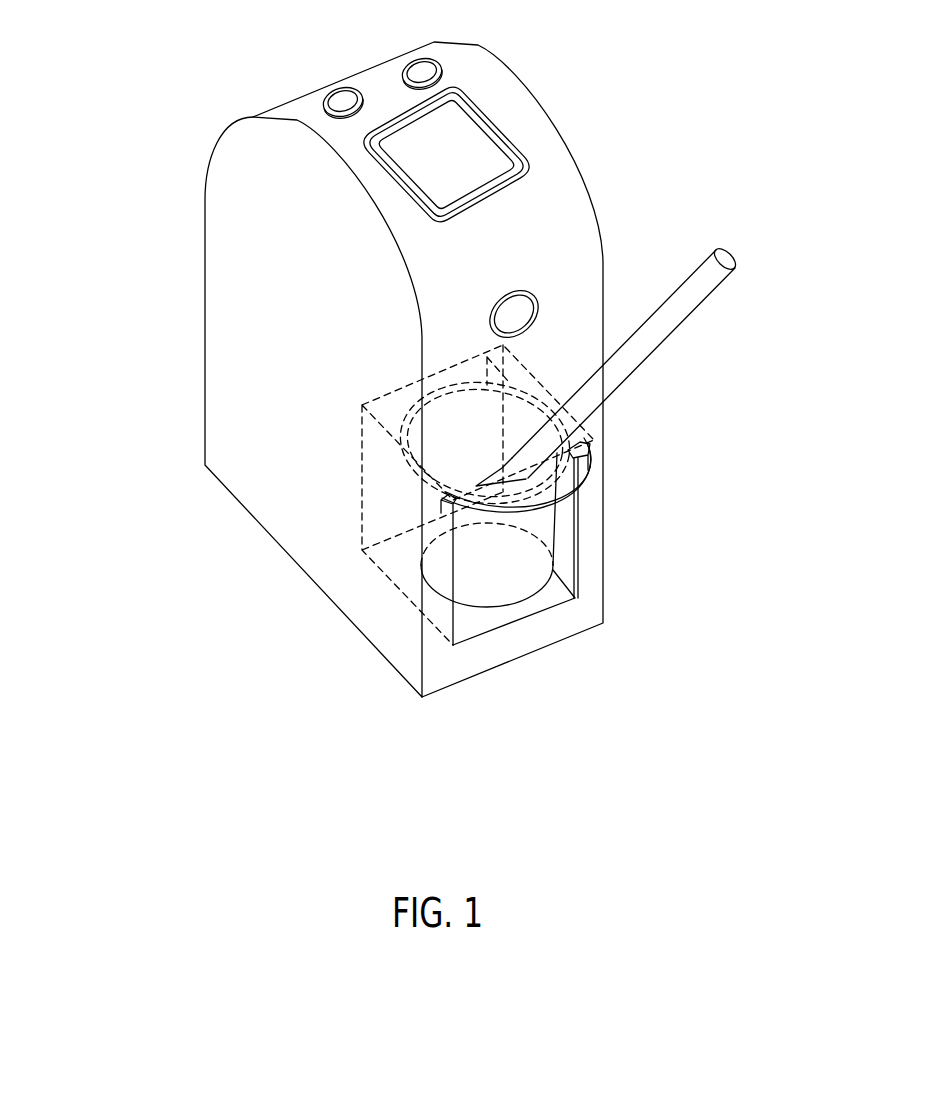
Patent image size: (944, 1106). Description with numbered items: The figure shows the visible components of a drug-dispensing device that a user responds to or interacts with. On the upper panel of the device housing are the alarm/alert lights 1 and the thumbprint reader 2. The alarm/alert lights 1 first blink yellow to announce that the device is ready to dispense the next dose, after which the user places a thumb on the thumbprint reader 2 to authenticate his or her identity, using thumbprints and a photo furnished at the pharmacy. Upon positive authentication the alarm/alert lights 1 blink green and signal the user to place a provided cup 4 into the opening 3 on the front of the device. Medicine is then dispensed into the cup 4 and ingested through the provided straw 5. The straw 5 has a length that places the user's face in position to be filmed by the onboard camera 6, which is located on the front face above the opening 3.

The alarm/alert lights 1 is at (317, 99).
The thumbprint reader 2 is at (457, 183).
The opening 3 is at (578, 560).
The cup 4 is at (487, 607).
The straw 5 is at (688, 332).
The onboard camera 6 is at (543, 290).